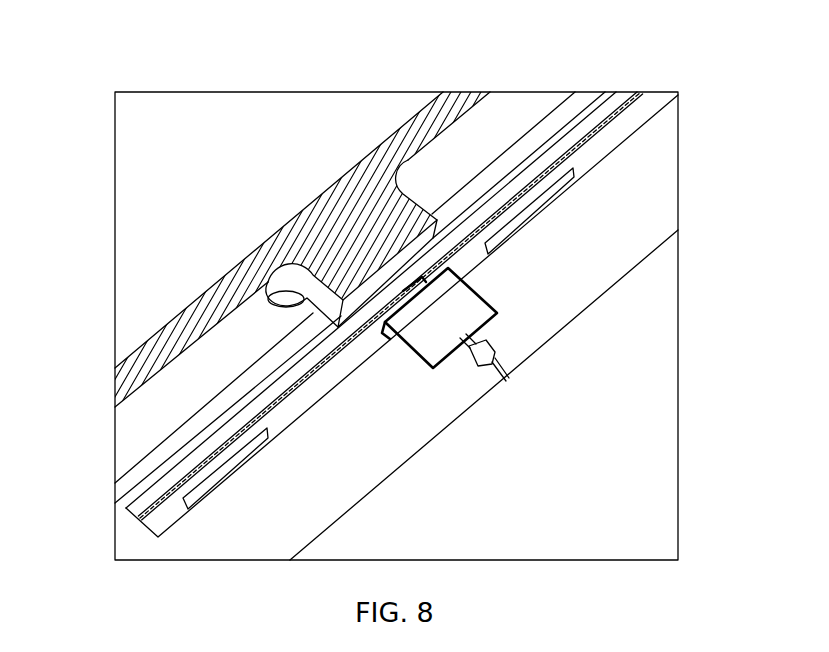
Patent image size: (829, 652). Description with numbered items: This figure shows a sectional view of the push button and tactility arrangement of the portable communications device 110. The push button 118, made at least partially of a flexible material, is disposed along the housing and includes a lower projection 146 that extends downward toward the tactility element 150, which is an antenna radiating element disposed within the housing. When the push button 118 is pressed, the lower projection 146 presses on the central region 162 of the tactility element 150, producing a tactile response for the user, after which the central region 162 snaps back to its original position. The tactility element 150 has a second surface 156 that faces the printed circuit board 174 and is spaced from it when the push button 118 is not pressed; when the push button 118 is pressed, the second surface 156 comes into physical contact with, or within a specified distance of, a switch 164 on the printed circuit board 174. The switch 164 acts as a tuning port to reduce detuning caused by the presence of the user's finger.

The portable communications device 110 is at (96, 66).
The push button 118 is at (468, 92).
The lower projection 146 is at (345, 213).
The tactility element 150 is at (585, 150).
The second surface 156 is at (642, 112).
The central region 162 is at (467, 267).
The switch 164 is at (413, 338).
The printed circuit board 174 is at (558, 292).